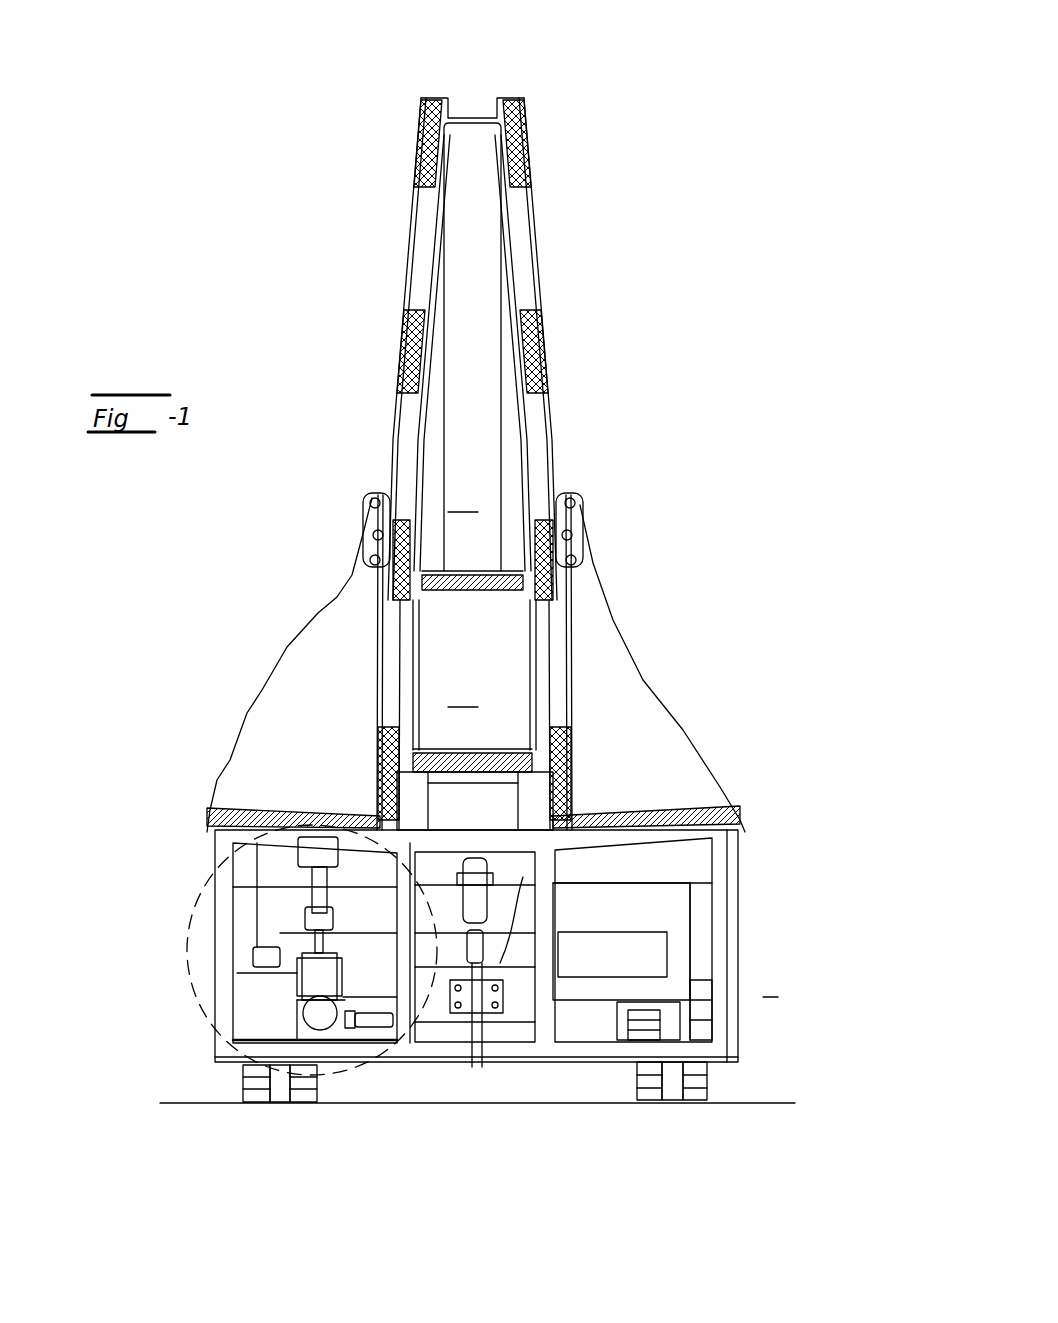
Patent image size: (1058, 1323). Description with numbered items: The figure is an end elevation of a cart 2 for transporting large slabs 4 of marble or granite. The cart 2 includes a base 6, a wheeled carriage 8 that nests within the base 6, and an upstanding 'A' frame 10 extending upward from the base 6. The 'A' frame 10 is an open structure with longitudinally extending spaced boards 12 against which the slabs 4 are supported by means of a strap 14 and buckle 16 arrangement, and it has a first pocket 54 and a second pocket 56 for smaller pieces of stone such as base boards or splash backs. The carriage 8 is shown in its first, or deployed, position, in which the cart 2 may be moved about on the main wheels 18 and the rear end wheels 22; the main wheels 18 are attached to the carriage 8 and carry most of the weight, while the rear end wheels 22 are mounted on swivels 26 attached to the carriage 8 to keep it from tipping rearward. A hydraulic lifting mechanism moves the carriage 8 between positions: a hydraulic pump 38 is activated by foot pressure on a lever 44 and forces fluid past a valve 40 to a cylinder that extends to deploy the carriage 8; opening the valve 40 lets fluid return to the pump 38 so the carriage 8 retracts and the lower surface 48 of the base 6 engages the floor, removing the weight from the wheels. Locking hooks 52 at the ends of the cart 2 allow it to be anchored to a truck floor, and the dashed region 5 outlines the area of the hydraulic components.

The cart 2 is at (425, 22).
The slabs 4 is at (343, 90).
The detail area 5 is at (188, 960).
The base 6 is at (735, 890).
The wheeled carriage 8 is at (690, 945).
The 'A' frame 10 is at (530, 445).
The spaced boards 12 is at (491, 460).
The strap 14 is at (560, 462).
The buckle 16 is at (580, 500).
The main wheels 18 is at (243, 1085).
The rear end wheels 22 is at (313, 1100).
The swivels 26 is at (622, 1010).
The hydraulic pump 38 is at (317, 980).
The valve 40 is at (333, 1040).
The lever 44 is at (312, 878).
The lower surface 48 is at (502, 1062).
The locking hooks 52 is at (475, 1037).
The first pocket 54 is at (463, 499).
The second pocket 56 is at (463, 694).